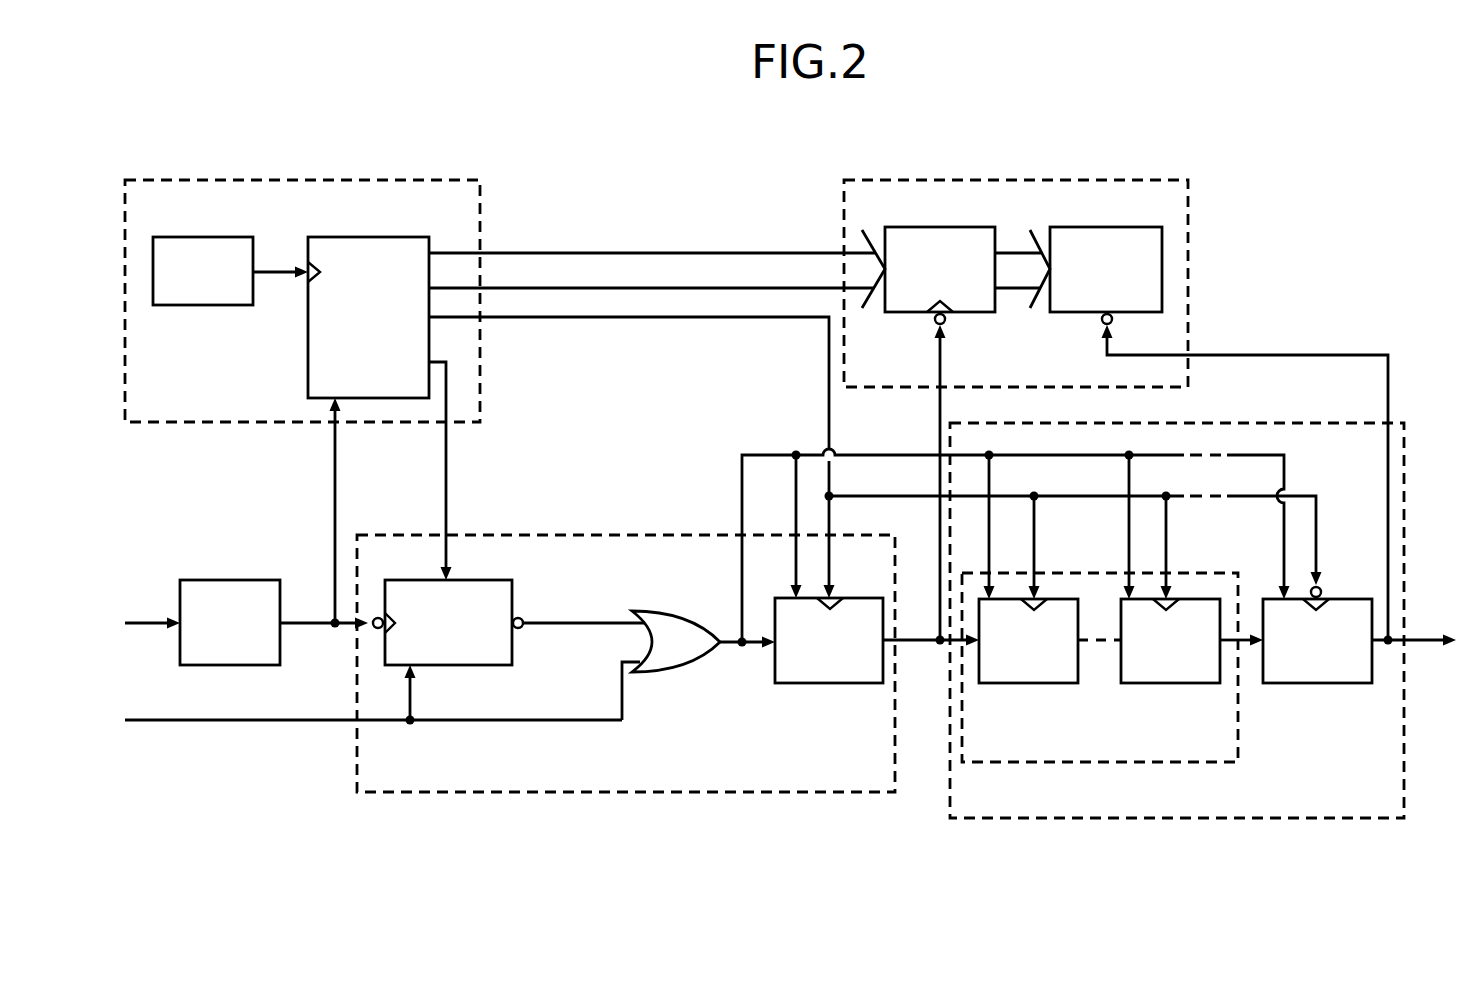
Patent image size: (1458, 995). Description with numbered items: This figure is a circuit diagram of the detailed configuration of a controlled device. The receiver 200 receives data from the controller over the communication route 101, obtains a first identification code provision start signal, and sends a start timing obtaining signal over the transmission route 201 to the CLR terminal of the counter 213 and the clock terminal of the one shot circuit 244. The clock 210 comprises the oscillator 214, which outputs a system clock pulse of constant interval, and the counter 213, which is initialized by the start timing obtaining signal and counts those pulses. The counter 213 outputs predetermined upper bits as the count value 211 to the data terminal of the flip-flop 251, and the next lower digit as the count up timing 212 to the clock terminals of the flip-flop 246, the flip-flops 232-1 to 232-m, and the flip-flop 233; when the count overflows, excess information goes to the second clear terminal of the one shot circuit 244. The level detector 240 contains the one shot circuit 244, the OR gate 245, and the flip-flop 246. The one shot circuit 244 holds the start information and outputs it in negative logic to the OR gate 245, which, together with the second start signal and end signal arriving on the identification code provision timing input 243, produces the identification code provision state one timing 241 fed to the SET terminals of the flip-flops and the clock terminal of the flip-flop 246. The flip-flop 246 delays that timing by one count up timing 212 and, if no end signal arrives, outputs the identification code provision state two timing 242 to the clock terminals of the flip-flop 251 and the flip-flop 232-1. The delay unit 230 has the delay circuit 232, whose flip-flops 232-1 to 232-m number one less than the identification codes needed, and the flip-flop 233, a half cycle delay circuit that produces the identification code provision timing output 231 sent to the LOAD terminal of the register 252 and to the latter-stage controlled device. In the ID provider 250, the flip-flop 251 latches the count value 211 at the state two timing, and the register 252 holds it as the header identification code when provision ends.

The communication route 101 is at (150, 621).
The receiver 200 is at (256, 578).
The transmission route 201 is at (305, 621).
The clock 210 is at (449, 178).
The count value 211 is at (738, 251).
The count up timing 212 is at (628, 320).
The counter 213 is at (403, 235).
The oscillator 214 is at (171, 307).
The delay unit 230 is at (1333, 820).
The identification code provision timing output 231 is at (1432, 643).
The delay circuit 232 is at (1190, 764).
The flip-flop 232-1 is at (1004, 685).
The flip-flop 232-m is at (1146, 685).
The flip-flop 233 is at (1280, 685).
The level detector 240 is at (538, 533).
The identification code provision state 1 timing 241 is at (890, 453).
The identification code provision state 2 timing 242 is at (915, 643).
The identification code provision timing input 243 is at (153, 718).
The one shot circuit 244 is at (481, 578).
The OR gate 245 is at (648, 608).
The flip-flop 246 is at (793, 685).
The ID provider 250 is at (1160, 178).
The flip-flop 251 is at (896, 226).
The register 252 is at (1138, 226).